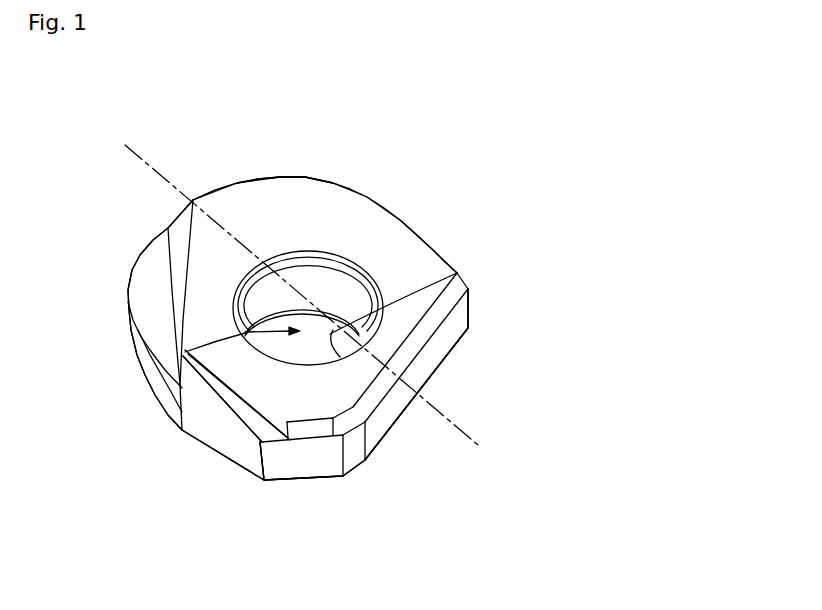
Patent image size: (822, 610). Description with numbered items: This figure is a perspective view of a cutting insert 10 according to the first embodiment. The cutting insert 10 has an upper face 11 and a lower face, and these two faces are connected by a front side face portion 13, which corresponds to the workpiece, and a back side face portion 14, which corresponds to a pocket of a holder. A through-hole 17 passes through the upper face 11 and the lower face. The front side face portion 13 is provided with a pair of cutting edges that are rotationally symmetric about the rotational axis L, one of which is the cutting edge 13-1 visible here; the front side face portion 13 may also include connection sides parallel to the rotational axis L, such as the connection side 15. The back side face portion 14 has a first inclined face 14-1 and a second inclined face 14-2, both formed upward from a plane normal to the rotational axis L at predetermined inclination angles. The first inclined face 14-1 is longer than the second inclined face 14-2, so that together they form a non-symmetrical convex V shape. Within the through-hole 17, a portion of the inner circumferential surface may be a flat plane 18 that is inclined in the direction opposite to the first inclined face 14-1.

The cutting insert 10 is at (420, 132).
The upper face 11 is at (393, 240).
The front side face portion 13 is at (202, 165).
The cutting edge 13-1 is at (147, 271).
The back side face portion 14 is at (366, 502).
The first inclined face 14-1 is at (450, 335).
The second inclined face 14-2 is at (293, 467).
The connection side 15 is at (220, 440).
The through-hole 17 is at (185, 352).
The flat plane 18 is at (457, 273).